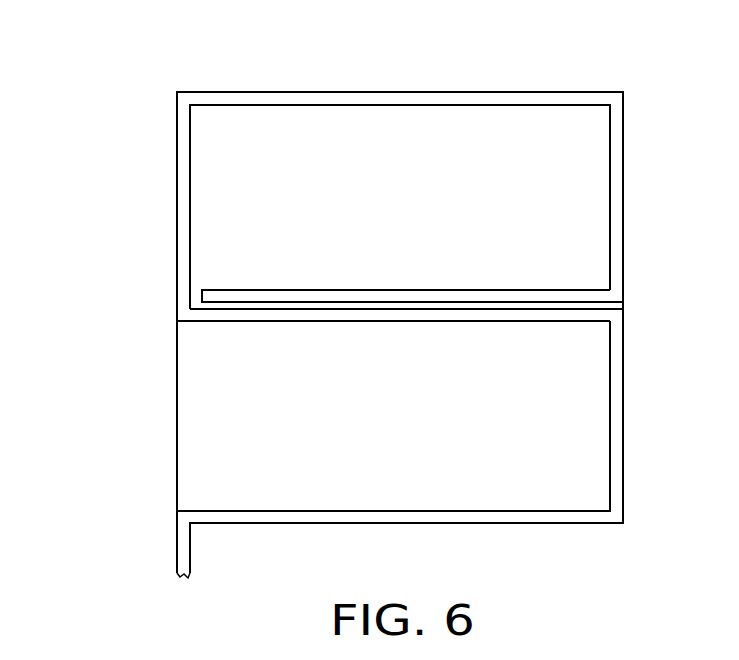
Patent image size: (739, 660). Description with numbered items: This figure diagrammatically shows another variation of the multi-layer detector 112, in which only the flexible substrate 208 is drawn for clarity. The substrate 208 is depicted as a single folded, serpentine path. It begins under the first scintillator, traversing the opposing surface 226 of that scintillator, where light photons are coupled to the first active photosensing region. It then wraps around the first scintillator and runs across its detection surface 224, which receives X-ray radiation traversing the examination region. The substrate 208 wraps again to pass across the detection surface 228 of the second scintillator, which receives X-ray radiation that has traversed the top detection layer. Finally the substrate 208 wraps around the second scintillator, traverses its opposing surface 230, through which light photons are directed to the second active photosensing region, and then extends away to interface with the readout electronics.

The battery cell 112 is at (333, 290).
The flexible substrate 208 is at (586, 97).
The detection surface 224 is at (236, 115).
The opposing surface 226 is at (432, 279).
The detection surface 228 is at (245, 361).
The opposing surface 230 is at (457, 454).